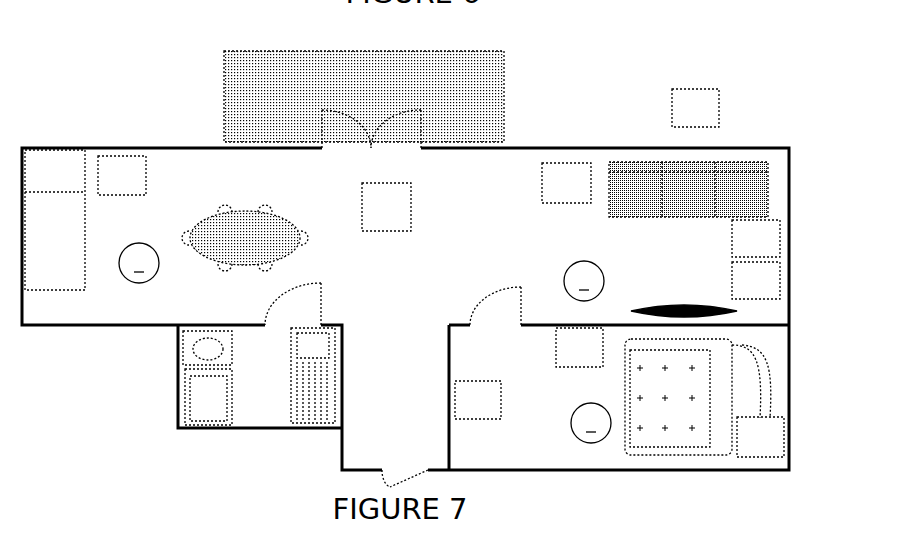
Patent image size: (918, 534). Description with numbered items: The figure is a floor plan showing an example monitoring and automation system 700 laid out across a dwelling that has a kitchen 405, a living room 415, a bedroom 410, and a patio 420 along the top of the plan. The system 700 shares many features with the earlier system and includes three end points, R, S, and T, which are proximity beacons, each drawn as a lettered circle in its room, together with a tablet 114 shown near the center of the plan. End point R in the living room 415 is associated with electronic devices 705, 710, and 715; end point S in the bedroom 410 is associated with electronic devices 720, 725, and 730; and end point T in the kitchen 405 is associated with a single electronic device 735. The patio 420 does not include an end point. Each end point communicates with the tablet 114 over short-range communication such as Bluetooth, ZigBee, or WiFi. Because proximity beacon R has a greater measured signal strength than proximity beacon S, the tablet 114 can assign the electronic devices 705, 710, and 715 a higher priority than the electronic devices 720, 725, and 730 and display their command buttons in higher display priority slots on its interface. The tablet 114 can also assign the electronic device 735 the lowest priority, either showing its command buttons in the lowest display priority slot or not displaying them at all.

The monitoring and automation system 700 is at (560, 56).
The patio 420 is at (279, 92).
The kitchen 405 is at (179, 188).
The living room 415 is at (647, 273).
The bedroom 410 is at (524, 420).
The tablet 114 is at (373, 219).
The electronic device 705 is at (553, 194).
The electronic device 710 is at (681, 119).
The electronic device 715 is at (743, 291).
The electronic device 720 is at (746, 447).
The electronic device 725 is at (566, 358).
The electronic device 730 is at (464, 410).
The electronic device 735 is at (108, 188).